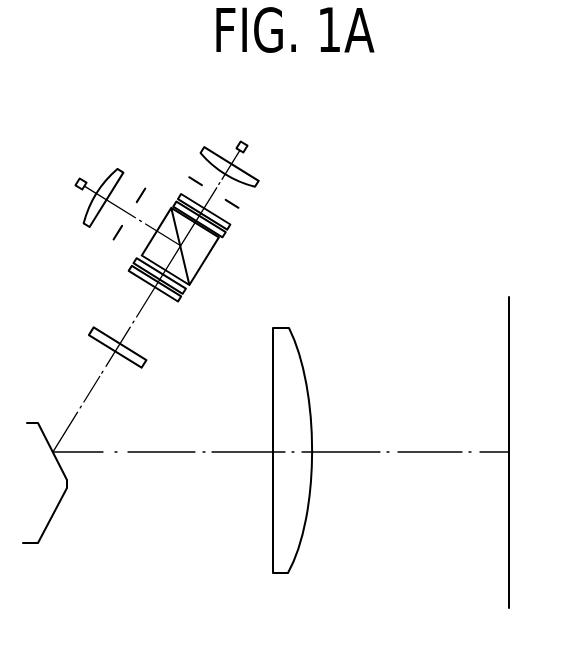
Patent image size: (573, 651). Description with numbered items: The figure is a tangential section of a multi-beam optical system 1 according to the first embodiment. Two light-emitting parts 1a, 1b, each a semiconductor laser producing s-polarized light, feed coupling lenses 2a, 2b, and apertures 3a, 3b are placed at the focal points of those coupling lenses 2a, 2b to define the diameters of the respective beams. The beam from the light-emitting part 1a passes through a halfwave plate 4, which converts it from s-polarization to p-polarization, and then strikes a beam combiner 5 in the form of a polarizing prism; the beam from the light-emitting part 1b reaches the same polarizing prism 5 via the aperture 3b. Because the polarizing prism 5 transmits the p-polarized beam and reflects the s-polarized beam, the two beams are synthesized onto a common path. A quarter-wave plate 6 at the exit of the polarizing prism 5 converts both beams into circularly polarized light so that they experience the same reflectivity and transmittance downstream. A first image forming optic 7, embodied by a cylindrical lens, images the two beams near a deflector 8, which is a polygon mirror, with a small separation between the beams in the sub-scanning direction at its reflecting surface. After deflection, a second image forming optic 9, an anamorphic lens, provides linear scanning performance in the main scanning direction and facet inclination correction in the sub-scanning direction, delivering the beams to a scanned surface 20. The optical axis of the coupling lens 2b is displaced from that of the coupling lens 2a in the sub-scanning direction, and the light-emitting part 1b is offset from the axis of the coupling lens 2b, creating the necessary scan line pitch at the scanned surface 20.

The multi-beam optical system 1 is at (132, 113).
The light-emitting part 1a is at (253, 101).
The light-emitting part 1b is at (55, 153).
The coupling lens 2a is at (256, 175).
The coupling lens 2b is at (88, 211).
The aperture 3a is at (235, 203).
The aperture 3b is at (117, 231).
The halfwave plate 4 is at (216, 224).
The beam combiner 5 is at (185, 246).
The quarter-wave plate 6 is at (169, 291).
The first image forming optic 7 is at (128, 355).
The deflector 8 is at (45, 466).
The second image forming optic 9 is at (290, 362).
The scanned surface 20 is at (510, 435).